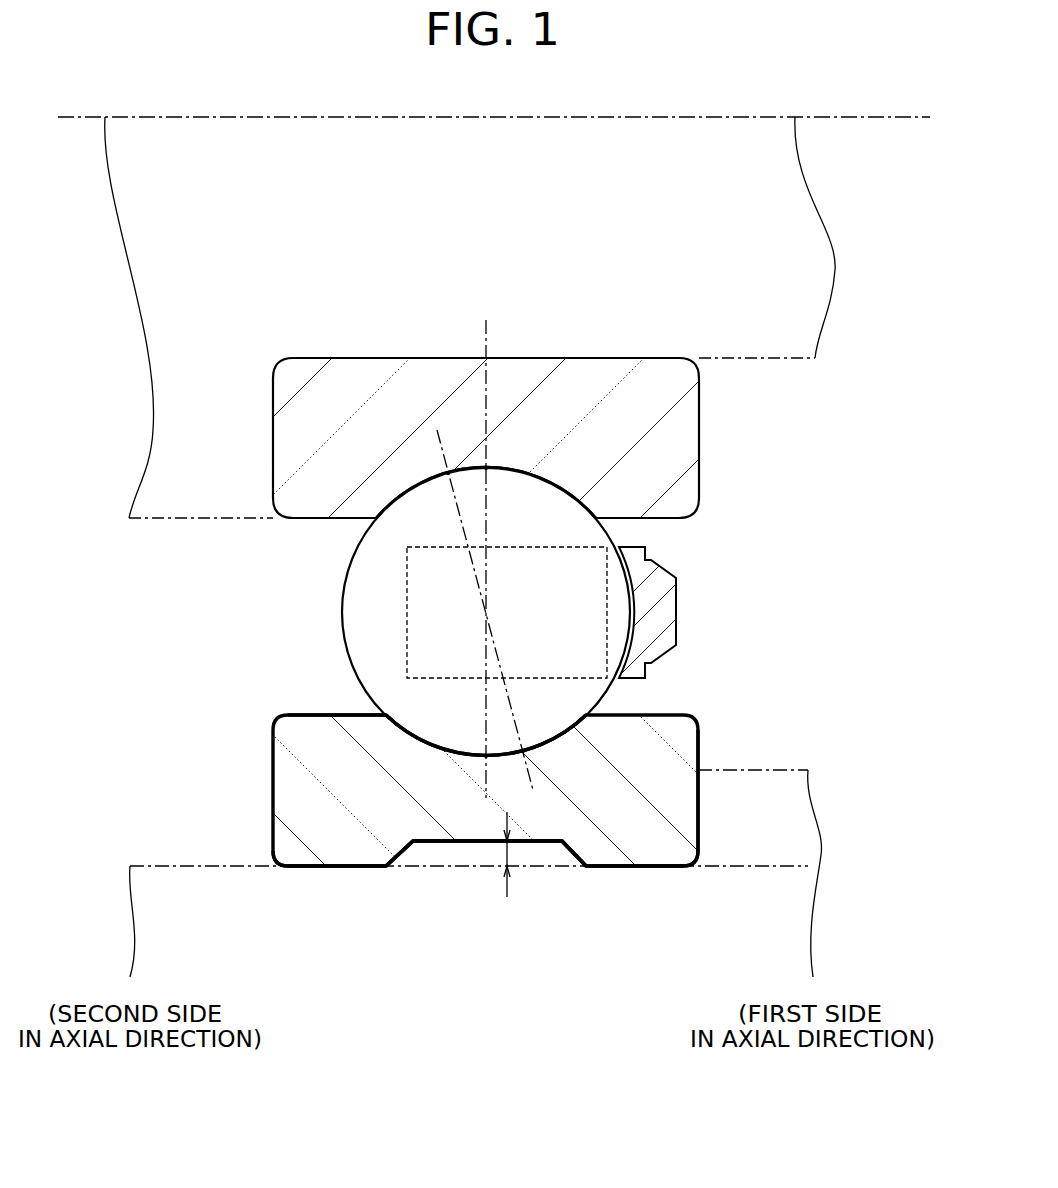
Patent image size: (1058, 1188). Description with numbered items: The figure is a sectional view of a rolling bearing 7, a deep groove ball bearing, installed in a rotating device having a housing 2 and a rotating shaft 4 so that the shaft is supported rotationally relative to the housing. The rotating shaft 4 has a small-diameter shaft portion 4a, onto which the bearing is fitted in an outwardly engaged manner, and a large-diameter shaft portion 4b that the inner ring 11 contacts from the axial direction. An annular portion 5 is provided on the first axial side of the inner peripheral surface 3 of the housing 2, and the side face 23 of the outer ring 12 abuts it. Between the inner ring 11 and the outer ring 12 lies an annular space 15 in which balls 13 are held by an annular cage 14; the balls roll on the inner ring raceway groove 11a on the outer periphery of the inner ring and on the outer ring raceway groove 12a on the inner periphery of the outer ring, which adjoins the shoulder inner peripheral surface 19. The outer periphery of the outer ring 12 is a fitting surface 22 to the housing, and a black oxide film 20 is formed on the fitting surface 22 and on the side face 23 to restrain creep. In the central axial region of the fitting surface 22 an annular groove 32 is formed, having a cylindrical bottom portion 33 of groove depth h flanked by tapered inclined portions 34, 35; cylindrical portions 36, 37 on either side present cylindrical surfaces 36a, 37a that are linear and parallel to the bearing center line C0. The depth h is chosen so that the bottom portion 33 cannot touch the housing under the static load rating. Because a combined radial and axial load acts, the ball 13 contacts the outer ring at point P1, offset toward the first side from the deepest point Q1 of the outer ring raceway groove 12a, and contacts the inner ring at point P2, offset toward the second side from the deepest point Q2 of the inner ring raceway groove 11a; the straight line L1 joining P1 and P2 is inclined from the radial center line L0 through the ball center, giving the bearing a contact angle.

The housing 2 is at (466, 839).
The inner peripheral surface 3 is at (220, 866).
The rotating shaft 4 is at (494, 370).
The small-diameter shaft portion 4a is at (782, 358).
The large-diameter shaft portion 4b is at (214, 518).
The annular portion 5 is at (758, 788).
The rolling bearing 7 is at (598, 343).
The inner ring 11 is at (584, 362).
The inner ring raceway groove 11a is at (418, 487).
The outer ring 12 is at (492, 811).
The outer ring raceway groove 12a is at (418, 737).
The ball 13 is at (448, 538).
The cage 14 is at (670, 591).
The annular space 15 is at (686, 547).
The shoulder inner peripheral surface 19 is at (300, 715).
The black oxide film 20 is at (608, 867).
The fitting surface 22 is at (366, 879).
The side face 23 is at (702, 817).
The annular groove 32 is at (485, 856).
The bottom portion 33 is at (450, 845).
The inclined portion 34 is at (570, 852).
The inclined portion 35 is at (398, 858).
The cylindrical portion 36 is at (665, 853).
The cylindrical surface 36a is at (638, 867).
The cylindrical portion 37 is at (307, 857).
The cylindrical surface 37a is at (333, 867).
The bearing center line C0 is at (863, 117).
The center line L0 is at (486, 333).
The straight line L1 is at (472, 567).
The point P1 is at (523, 752).
The point P2 is at (448, 475).
The deepest point Q1 is at (486, 757).
The deepest point Q2 is at (486, 470).
The groove depth h is at (510, 866).